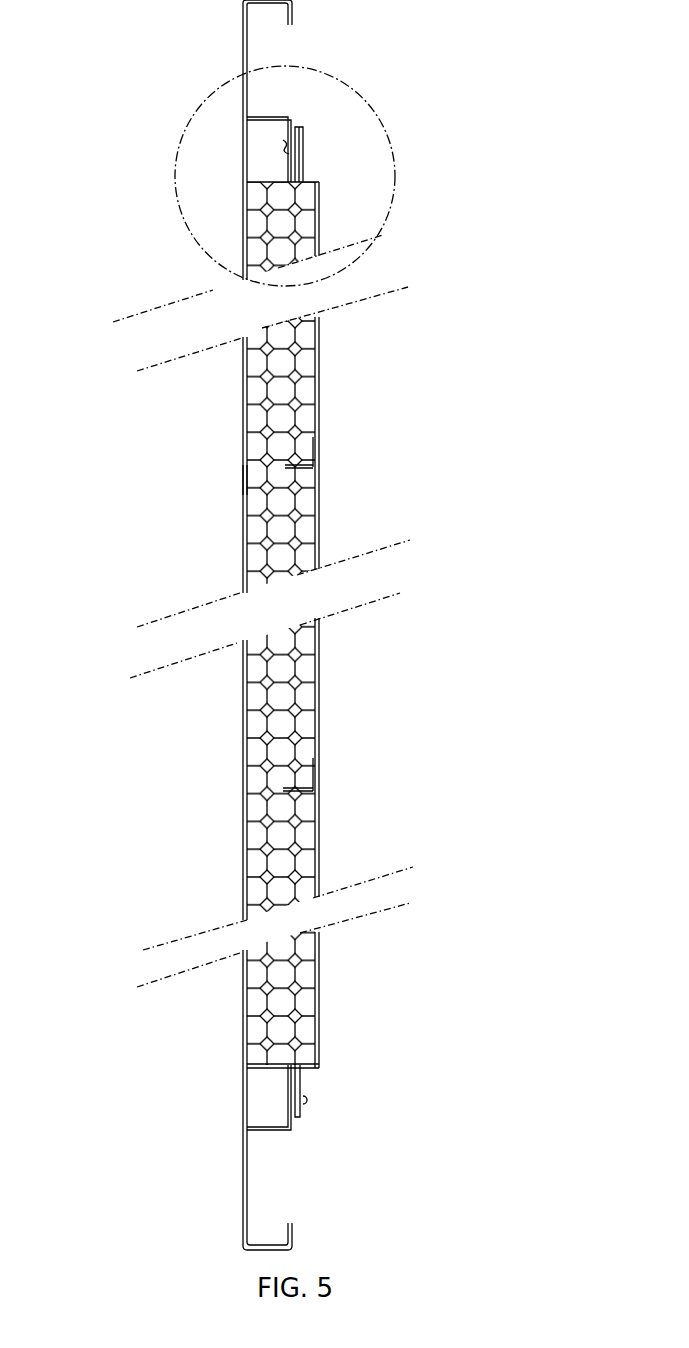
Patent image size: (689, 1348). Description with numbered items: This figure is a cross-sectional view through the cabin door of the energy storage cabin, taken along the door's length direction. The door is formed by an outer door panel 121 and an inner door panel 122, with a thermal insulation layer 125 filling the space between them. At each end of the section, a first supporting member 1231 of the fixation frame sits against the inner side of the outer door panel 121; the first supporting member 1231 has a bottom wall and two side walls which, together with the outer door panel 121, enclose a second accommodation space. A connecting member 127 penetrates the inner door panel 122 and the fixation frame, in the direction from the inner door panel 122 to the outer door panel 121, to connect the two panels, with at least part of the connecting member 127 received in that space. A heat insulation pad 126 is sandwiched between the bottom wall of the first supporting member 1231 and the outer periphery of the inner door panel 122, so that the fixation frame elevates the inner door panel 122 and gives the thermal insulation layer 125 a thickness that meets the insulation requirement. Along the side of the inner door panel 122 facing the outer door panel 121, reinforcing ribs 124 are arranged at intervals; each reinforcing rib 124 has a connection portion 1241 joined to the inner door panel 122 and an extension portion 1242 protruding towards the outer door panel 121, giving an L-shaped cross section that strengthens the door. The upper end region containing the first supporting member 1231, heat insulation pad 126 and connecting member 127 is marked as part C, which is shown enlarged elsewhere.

The outer door panel 121 is at (245, 402).
The inner door panel 122 is at (317, 383).
The first supporting member 1231 is at (268, 118).
The reinforcing rib 124 is at (297, 788).
The connection portion 1241 is at (315, 450).
The extension portion 1242 is at (247, 480).
The thermal insulation layer 125 is at (287, 705).
The heat insulation pad 126 is at (295, 163).
The connecting member 127 is at (290, 146).
The part C is at (370, 103).